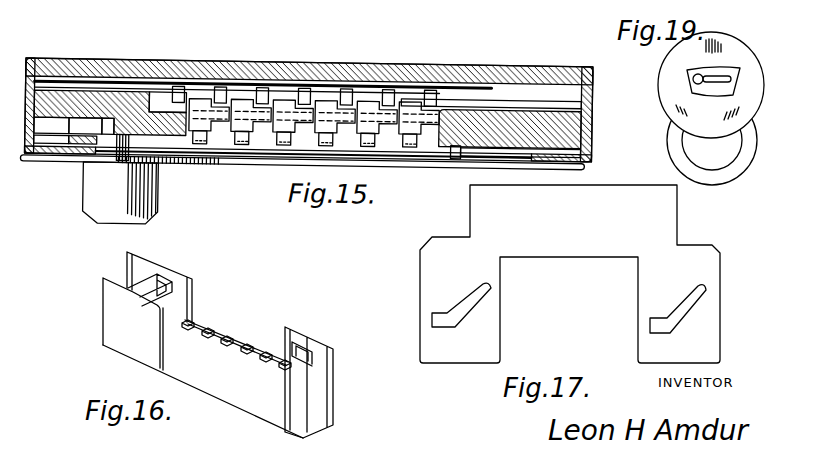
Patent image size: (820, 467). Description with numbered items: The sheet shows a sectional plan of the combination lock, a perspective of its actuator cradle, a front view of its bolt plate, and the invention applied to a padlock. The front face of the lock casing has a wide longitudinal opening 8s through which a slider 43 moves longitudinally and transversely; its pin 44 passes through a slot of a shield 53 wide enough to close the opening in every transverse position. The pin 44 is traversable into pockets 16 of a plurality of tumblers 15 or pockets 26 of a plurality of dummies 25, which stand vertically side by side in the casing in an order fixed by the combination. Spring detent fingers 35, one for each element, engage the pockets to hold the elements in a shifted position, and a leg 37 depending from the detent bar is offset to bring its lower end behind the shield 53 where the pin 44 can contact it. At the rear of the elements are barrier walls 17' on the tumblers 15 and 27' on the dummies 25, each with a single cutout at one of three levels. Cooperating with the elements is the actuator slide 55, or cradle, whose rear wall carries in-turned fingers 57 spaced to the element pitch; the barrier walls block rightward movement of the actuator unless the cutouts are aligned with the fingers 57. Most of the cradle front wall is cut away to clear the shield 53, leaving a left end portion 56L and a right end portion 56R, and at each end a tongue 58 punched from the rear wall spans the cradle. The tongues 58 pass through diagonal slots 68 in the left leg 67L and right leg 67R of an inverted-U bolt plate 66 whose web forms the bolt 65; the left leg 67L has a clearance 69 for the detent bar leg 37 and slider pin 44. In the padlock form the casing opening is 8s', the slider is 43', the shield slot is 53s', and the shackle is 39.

In FIG. 15, the left leg 67L is at (55, 100).
In FIG. 17, the left leg 67L is at (490, 330).
In FIG. 15, the right leg 67R is at (512, 104).
In FIG. 17, the right leg 67R is at (647, 305).
In FIG. 15, the barrier wall 27' is at (191, 94).
In FIG. 15, the dummy 25 is at (207, 98).
In FIG. 15, the in-turned finger 57 is at (221, 84).
In FIG. 16, the in-turned finger 57 is at (212, 330).
In FIG. 15, the barrier wall 17' is at (251, 84).
In FIG. 15, the tumbler 15 is at (270, 96).
In FIG. 15, the actuator slide 55 is at (409, 92).
In FIG. 16, the actuator slide 55 is at (318, 403).
In FIG. 15, the clearance 69 is at (56, 122).
In FIG. 15, the leg 37 is at (72, 150).
In FIG. 15, the pin 44 is at (118, 137).
In FIG. 15, the pocket 26 is at (182, 128).
In FIG. 15, the spring detent finger 35 is at (203, 141).
In FIG. 15, the pocket 16 is at (247, 141).
In FIG. 15, the longitudinal opening 8s is at (302, 171).
In FIG. 15, the right end portion 56R is at (482, 145).
In FIG. 16, the right end portion 56R is at (288, 392).
In FIG. 16, the left end portion 56L is at (120, 322).
In FIG. 15, the slider 43 is at (100, 192).
In FIG. 16, the tongue 58 is at (128, 283).
In FIG. 17, the bolt 65 is at (622, 197).
In FIG. 17, the bolt plate 66 is at (568, 252).
In FIG. 17, the slot 68 is at (472, 292).
In FIG. 19, the shield 53 is at (708, 71).
In FIG. 19, the shield slot 53s' is at (743, 57).
In FIG. 19, the slider 43' is at (663, 72).
In FIG. 19, the casing opening 8s' is at (667, 104).
In FIG. 19, the shackle 39 is at (750, 154).